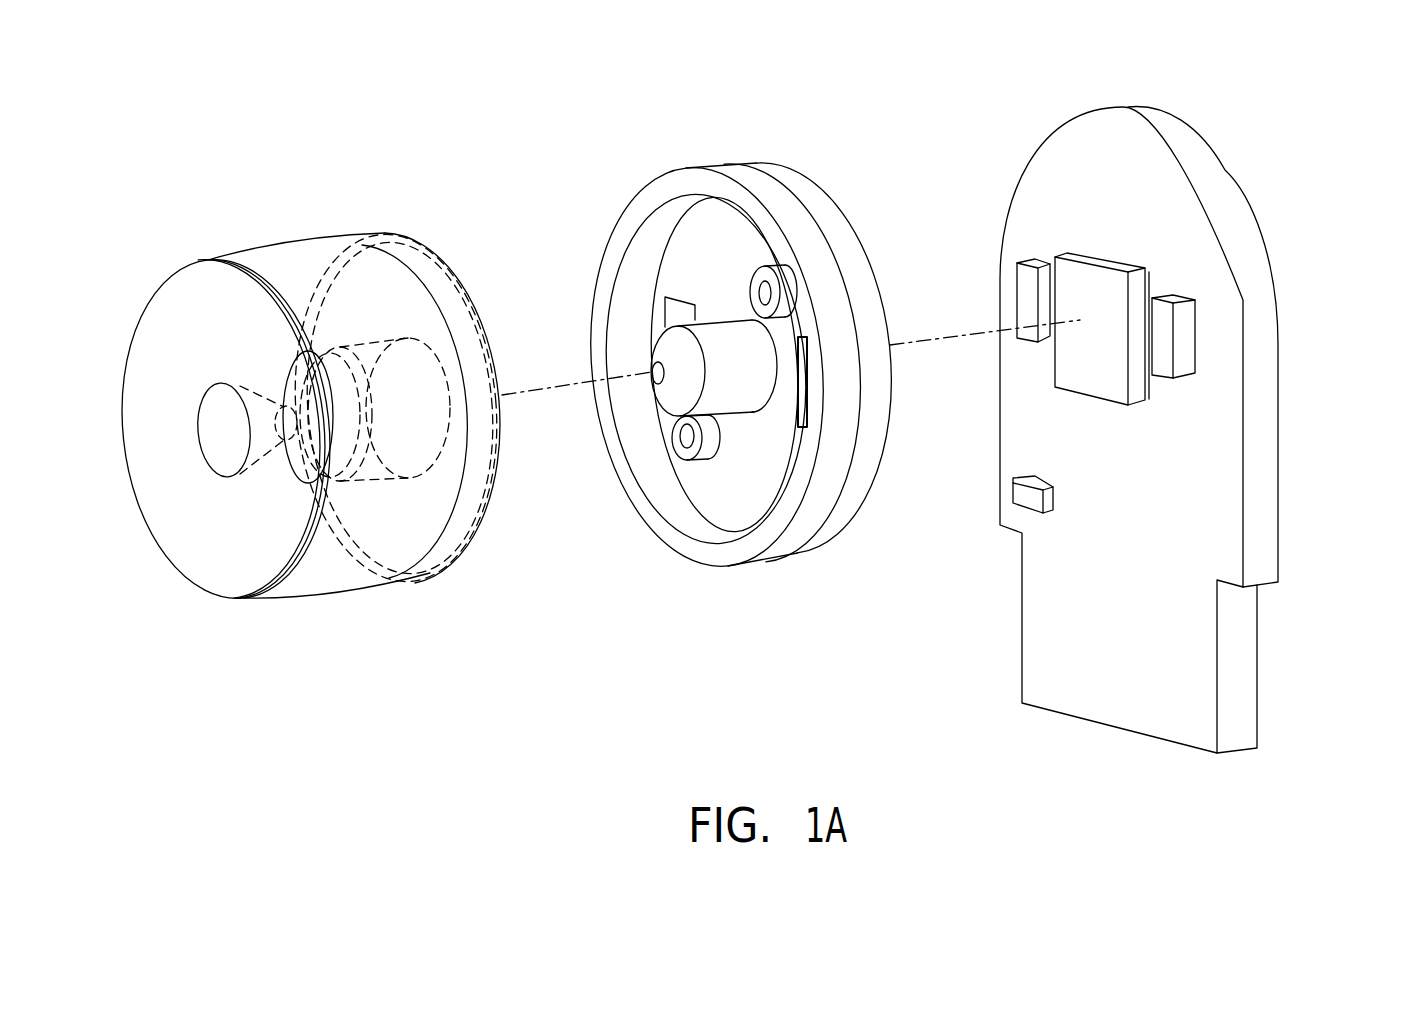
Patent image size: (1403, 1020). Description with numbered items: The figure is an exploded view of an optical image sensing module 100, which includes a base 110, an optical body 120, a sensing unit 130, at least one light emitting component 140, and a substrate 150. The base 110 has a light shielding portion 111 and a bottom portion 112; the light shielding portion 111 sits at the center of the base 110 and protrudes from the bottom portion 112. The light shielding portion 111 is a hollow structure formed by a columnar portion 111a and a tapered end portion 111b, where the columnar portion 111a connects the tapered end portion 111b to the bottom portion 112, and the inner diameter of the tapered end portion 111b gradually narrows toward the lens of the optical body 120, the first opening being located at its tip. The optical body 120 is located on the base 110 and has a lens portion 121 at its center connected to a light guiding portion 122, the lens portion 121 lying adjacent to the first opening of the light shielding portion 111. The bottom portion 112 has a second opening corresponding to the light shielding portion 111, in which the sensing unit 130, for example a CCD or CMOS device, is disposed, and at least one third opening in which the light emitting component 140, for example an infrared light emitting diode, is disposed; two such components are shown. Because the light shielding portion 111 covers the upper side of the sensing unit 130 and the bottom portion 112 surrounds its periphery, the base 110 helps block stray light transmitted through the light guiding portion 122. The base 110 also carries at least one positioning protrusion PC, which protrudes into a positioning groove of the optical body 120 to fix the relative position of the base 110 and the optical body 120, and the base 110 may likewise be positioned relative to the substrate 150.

The optical image sensing module 100 is at (1378, 783).
The base 110 is at (723, 143).
The light shielding portion 111 is at (723, 668).
The columnar portion 111a is at (732, 397).
The tapered end portion 111b is at (678, 385).
The bottom portion 112 is at (760, 480).
The optical body 120 is at (296, 218).
The lens portion 121 is at (279, 575).
The light guiding portion 122 is at (352, 540).
The sensing unit 130 is at (1087, 290).
The light emitting component 140 is at (1030, 338).
The substrate 150 is at (1248, 228).
The positioning protrusion PC is at (775, 283).